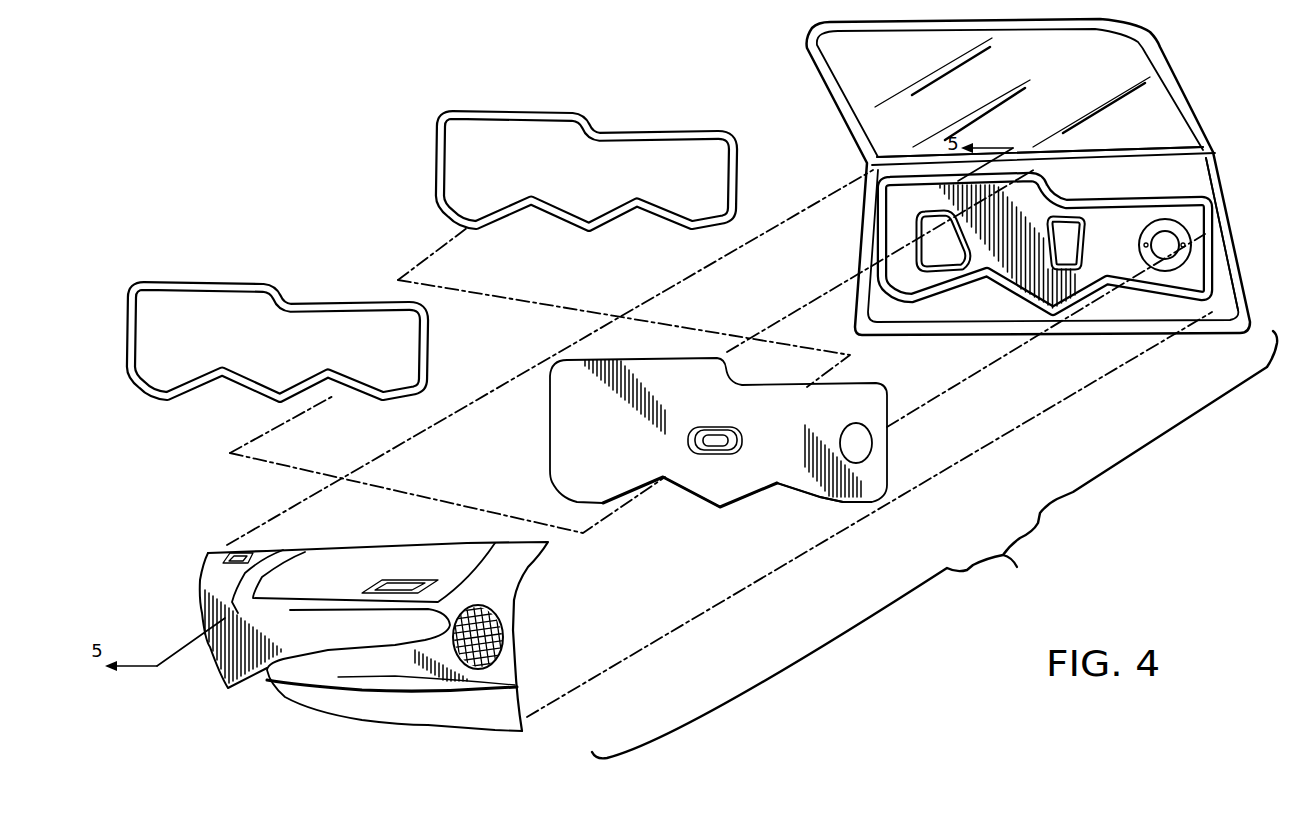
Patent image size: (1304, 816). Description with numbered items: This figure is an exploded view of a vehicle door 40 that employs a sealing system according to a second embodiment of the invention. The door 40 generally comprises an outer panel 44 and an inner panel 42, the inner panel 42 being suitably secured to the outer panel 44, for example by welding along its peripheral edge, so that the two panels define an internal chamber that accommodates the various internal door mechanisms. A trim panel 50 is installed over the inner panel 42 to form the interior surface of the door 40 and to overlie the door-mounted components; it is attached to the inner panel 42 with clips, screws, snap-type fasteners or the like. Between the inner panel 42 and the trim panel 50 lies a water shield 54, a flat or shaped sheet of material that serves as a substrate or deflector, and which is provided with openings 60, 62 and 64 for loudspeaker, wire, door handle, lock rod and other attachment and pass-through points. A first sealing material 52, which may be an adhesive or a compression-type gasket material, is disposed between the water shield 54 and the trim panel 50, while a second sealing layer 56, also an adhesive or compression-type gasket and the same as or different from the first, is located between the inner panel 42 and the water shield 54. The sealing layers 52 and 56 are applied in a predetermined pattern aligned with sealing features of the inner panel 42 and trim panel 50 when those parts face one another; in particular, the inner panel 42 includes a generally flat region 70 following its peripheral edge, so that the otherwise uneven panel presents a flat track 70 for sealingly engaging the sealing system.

The vehicle door 40 is at (1222, 107).
The inner panel 42 is at (1120, 175).
The outer panel 44 is at (1231, 200).
The trim panel 50 is at (213, 616).
The first sealing material 52 is at (236, 287).
The water shield 54 is at (726, 446).
The second sealing layer 56 is at (577, 113).
The opening 60 is at (707, 446).
The opening 62 is at (855, 442).
The opening 64 is at (603, 458).
The flat region 70 is at (878, 238).